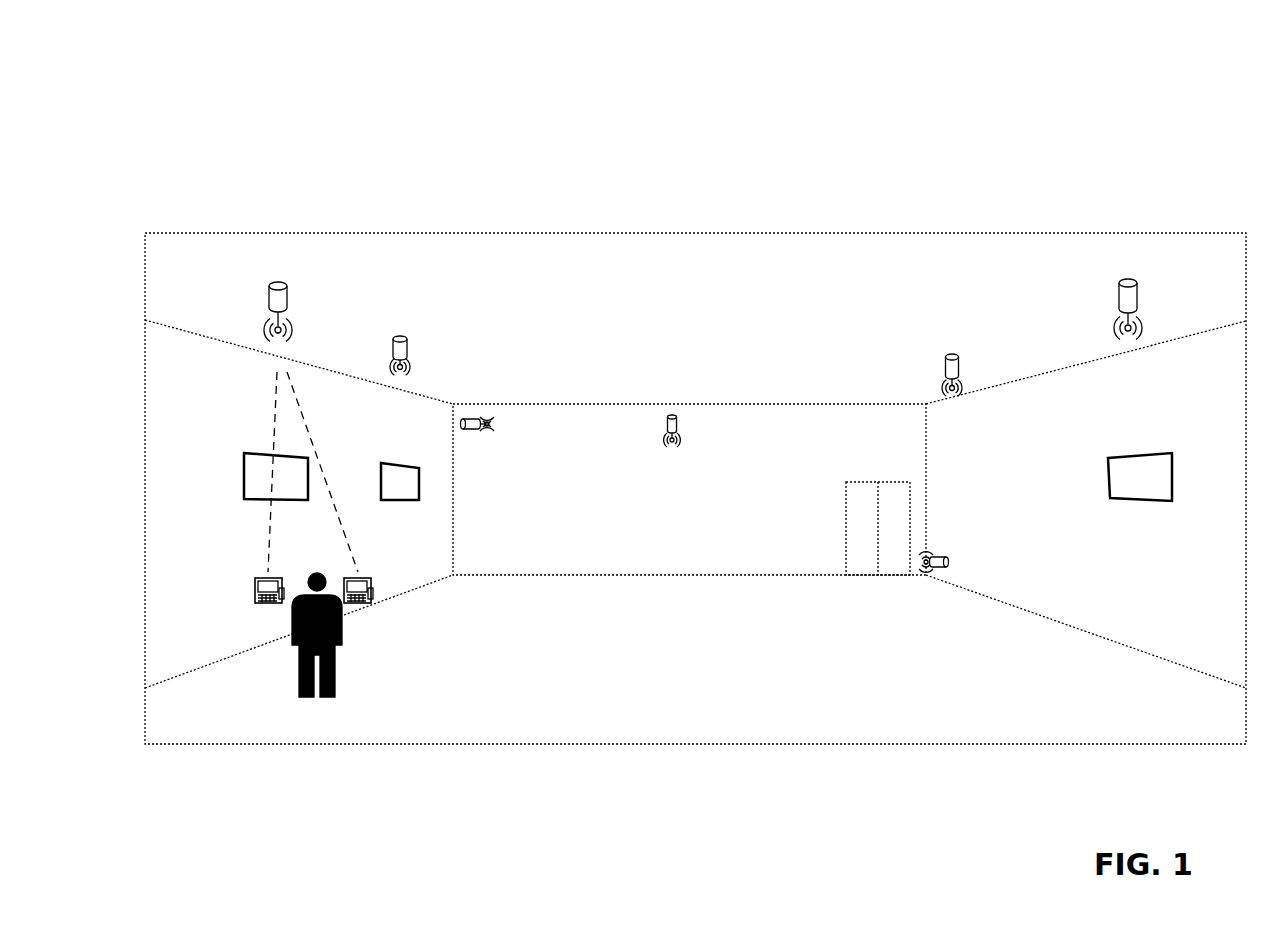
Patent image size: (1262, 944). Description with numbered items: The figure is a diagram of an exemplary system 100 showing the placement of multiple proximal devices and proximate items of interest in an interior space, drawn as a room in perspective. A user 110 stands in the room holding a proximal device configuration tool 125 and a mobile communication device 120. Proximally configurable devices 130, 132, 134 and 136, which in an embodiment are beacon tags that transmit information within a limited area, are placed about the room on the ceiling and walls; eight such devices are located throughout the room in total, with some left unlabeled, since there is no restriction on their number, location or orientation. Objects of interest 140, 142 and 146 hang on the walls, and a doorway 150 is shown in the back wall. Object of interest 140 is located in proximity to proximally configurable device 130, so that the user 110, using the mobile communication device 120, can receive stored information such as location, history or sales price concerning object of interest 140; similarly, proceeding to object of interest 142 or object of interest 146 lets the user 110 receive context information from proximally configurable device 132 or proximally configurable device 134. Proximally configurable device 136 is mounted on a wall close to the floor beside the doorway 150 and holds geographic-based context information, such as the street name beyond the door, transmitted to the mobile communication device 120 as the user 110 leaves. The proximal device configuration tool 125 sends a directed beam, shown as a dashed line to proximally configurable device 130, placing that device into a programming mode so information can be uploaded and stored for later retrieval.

The system 100 is at (153, 84).
The user 110 is at (343, 628).
The mobile communication device 120 is at (368, 577).
The proximal device configuration tool 125 is at (257, 577).
The proximally configurable device 130 is at (268, 300).
The proximally configurable device 132 is at (402, 337).
The proximally configurable device 134 is at (1119, 288).
The proximally configurable device 136 is at (950, 558).
The object of interest 140 is at (244, 472).
The object of interest 142 is at (382, 467).
The object of interest 146 is at (1108, 482).
The doorway 150 is at (846, 546).